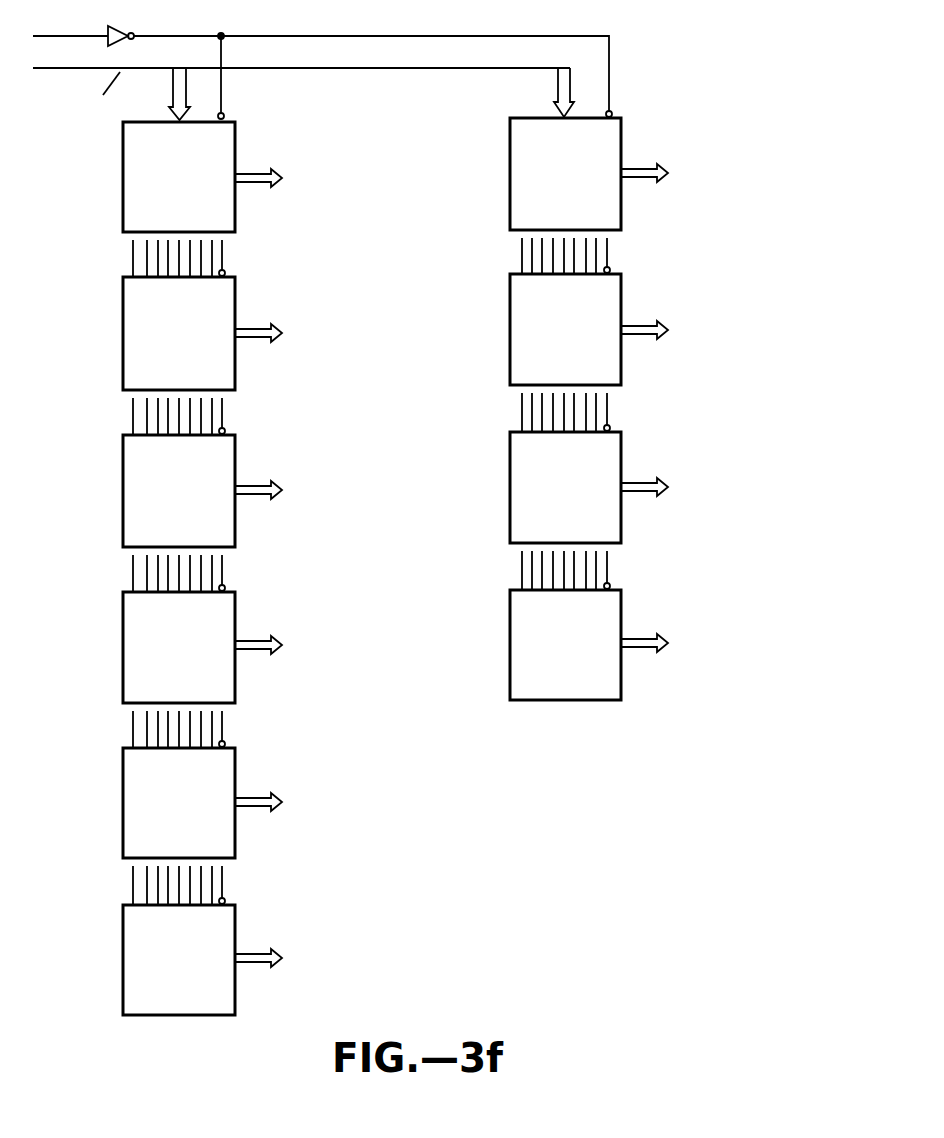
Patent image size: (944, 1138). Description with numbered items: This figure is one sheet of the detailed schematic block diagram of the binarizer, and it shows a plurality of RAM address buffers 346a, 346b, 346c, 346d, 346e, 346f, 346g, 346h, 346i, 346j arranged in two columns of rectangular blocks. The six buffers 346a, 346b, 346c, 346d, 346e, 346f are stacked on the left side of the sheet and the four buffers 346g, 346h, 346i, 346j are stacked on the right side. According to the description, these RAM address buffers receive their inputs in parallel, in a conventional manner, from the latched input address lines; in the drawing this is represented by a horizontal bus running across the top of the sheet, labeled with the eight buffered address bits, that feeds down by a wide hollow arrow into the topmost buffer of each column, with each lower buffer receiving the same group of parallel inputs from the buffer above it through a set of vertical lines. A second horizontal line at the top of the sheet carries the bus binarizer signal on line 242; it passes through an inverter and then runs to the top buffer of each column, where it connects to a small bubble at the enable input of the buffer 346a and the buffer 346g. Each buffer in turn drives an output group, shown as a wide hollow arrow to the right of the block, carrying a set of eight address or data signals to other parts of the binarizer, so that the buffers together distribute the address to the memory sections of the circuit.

The bus binarizer signal line 242 is at (56, 36).
The RAM address buffer 346a is at (232, 177).
The RAM address buffer 346b is at (228, 315).
The RAM address buffer 346c is at (260, 472).
The RAM address buffer 346d is at (229, 629).
The RAM address buffer 346e is at (260, 784).
The RAM address buffer 346f is at (260, 940).
The RAM address buffer 346g is at (647, 174).
The RAM address buffer 346h is at (617, 311).
The RAM address buffer 346i is at (608, 468).
The RAM address buffer 346j is at (646, 625).